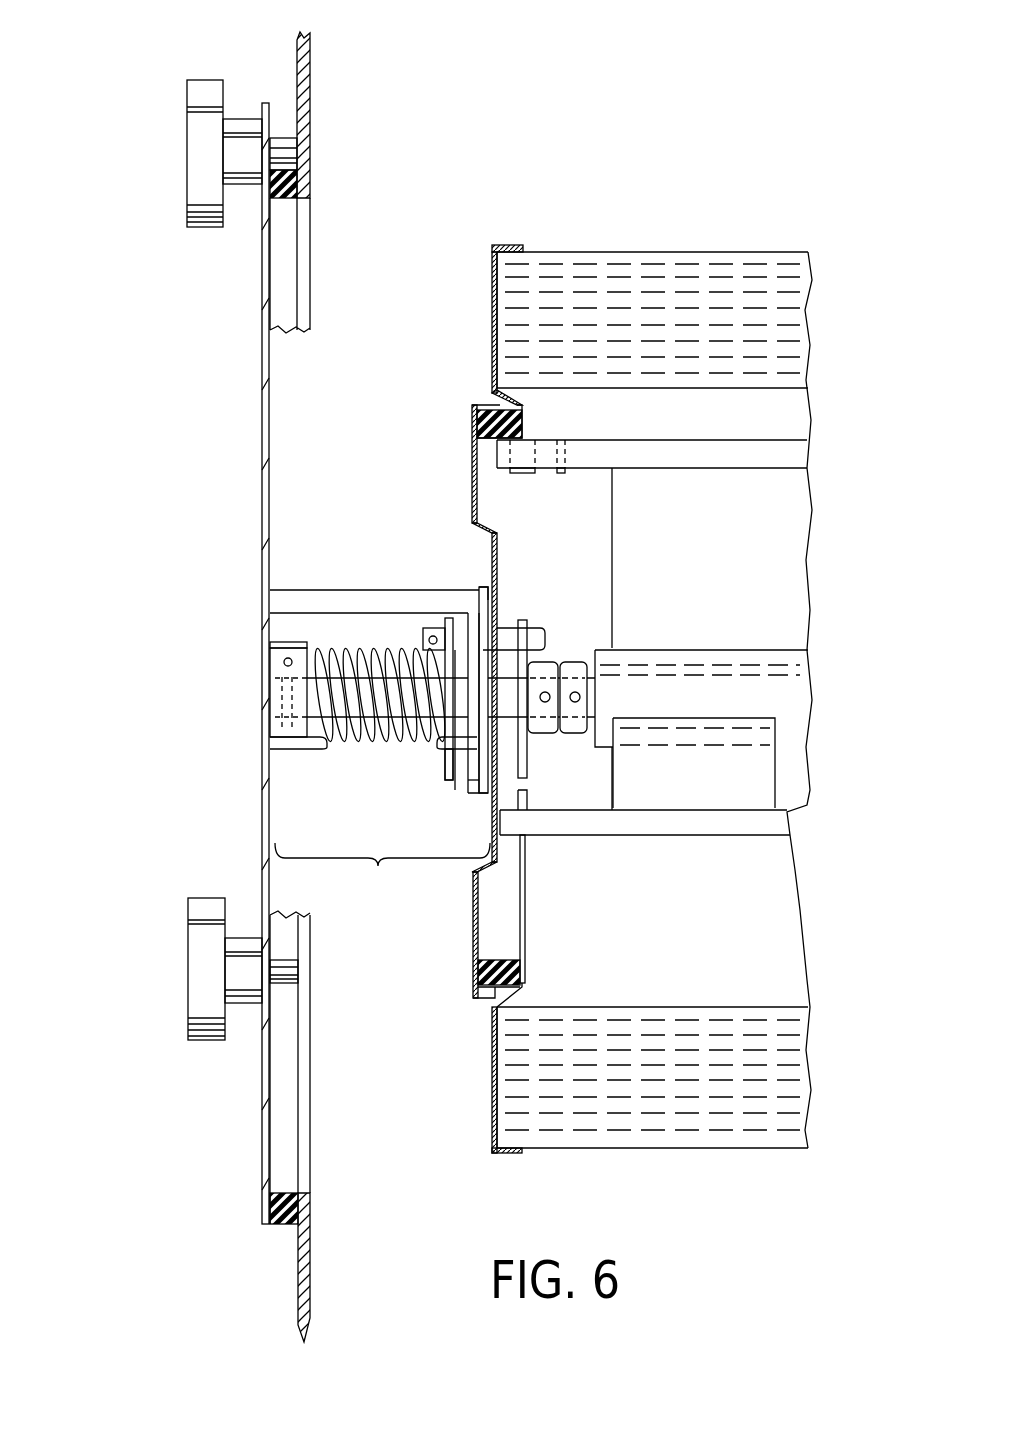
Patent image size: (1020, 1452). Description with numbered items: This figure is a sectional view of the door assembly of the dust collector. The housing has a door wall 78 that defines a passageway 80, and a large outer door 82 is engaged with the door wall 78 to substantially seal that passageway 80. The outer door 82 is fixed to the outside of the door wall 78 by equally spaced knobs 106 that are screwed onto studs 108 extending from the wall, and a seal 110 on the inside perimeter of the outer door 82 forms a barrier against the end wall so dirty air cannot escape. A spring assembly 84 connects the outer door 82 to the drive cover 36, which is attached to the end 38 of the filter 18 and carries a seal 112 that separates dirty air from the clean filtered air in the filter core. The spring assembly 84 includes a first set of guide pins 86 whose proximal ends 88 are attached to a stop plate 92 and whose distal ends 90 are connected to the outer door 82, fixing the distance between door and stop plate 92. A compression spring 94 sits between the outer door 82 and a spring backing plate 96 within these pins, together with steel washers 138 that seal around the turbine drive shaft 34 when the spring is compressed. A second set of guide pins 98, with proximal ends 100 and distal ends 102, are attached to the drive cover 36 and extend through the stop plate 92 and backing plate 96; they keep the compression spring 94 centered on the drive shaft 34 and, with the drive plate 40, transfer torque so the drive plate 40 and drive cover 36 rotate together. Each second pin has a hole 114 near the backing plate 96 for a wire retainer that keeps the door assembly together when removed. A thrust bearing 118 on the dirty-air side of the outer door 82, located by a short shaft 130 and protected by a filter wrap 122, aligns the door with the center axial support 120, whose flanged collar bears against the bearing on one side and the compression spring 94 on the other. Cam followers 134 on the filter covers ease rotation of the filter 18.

The filter 18 is at (552, 250).
The turbine drive shaft 34 is at (505, 720).
The drive cover 36 is at (473, 923).
The end of the filter 38 is at (493, 1100).
The drive plate 40 is at (527, 620).
The door wall 78 is at (300, 1285).
The passageway 80 is at (352, 350).
The outer door 82 is at (262, 808).
The spring assembly 84 is at (382, 872).
The first set of guide pins 86 is at (372, 590).
The proximal ends of the first guide pins 88 is at (480, 618).
The distal ends of the first guide pins 90 is at (274, 592).
The stop plate 92 is at (486, 598).
The compression spring 94 is at (352, 655).
The spring backing plate 96 is at (447, 780).
The second set of guide pins 98 is at (503, 627).
The proximal ends of the second guide pins 100 is at (545, 630).
The distal ends of the second guide pins 102 is at (447, 622).
The knobs 106 is at (190, 122).
The studs 108 is at (283, 138).
The seal 110 is at (283, 200).
The seal 112 is at (492, 405).
The hole 114 is at (429, 640).
The thrust bearing 118 is at (285, 665).
The center axial support 120 is at (297, 697).
The filter wrap 122 is at (287, 642).
The short shaft 130 is at (277, 685).
The cam followers 134 is at (525, 470).
The steel washers 138 is at (470, 800).